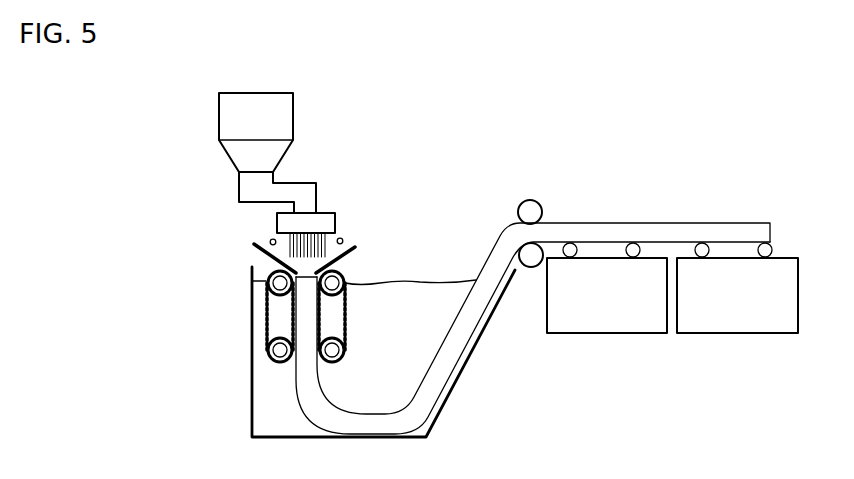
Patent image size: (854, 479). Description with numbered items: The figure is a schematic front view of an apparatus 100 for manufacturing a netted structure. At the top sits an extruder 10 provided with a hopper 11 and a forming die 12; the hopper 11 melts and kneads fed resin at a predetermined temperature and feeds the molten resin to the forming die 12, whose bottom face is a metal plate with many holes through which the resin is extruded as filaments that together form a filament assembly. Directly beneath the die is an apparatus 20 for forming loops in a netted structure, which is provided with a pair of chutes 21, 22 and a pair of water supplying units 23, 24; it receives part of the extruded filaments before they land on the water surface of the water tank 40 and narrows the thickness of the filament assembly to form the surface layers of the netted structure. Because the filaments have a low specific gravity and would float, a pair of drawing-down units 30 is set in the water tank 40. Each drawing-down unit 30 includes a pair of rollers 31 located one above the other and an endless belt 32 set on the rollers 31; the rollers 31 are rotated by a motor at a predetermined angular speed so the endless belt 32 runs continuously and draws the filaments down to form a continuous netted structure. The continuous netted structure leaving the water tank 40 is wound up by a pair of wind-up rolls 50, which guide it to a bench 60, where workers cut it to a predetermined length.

The apparatus for manufacturing a netted structure 100 is at (496, 190).
The extruder 10 is at (174, 90).
The hopper 11 is at (219, 123).
The forming die 12 is at (335, 215).
The apparatus for forming loops in a netted structure 20 is at (174, 227).
The chute 21 is at (255, 245).
The chute 22 is at (356, 248).
The water supplying unit 23 is at (271, 239).
The water supplying unit 24 is at (343, 240).
The drawing-down unit 30 is at (174, 273).
The roller 31 is at (269, 345).
The endless belt 32 is at (267, 304).
The water tank 40 is at (452, 390).
The wind-up roll 50 is at (541, 208).
The bench 60 is at (618, 326).